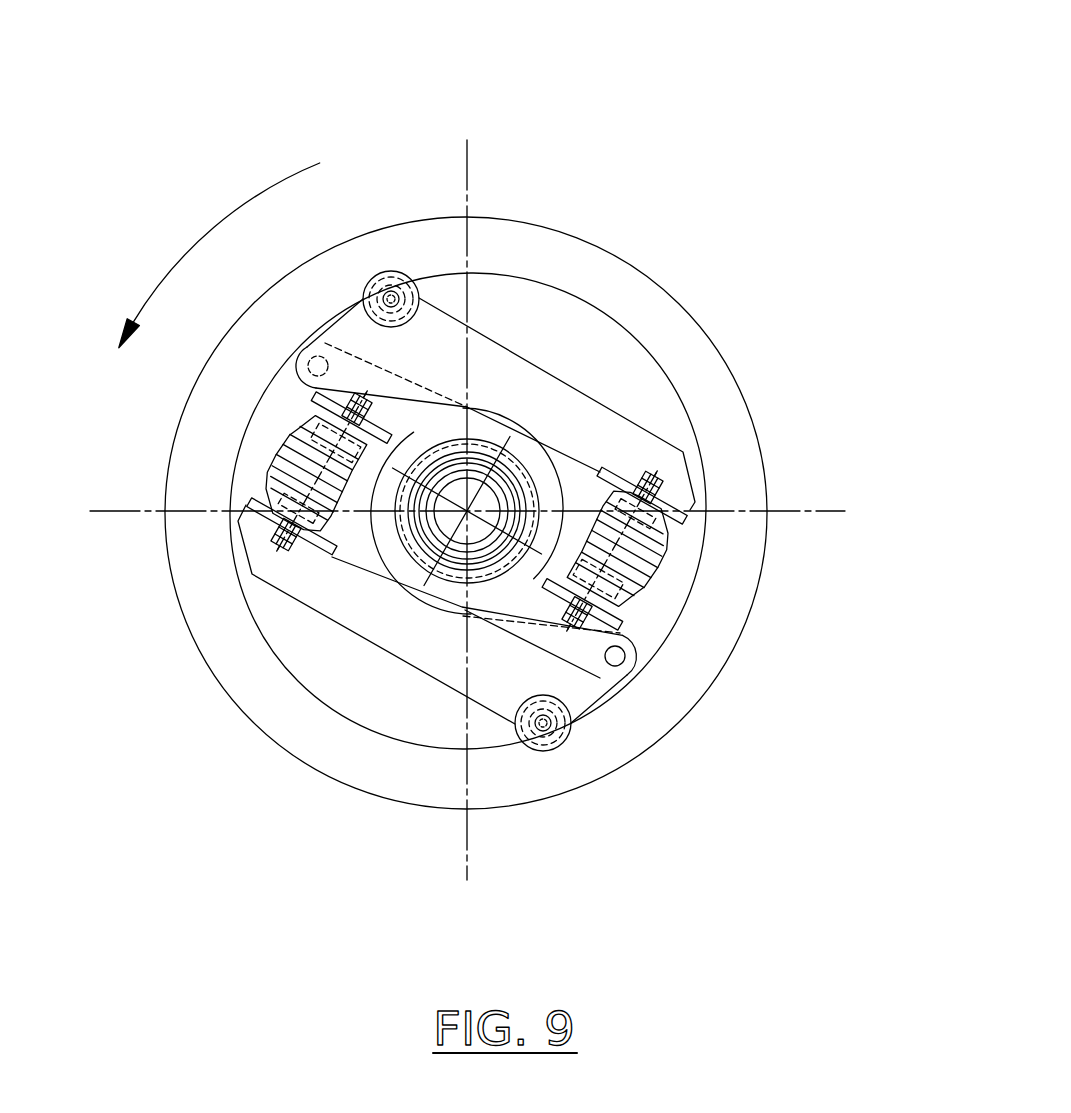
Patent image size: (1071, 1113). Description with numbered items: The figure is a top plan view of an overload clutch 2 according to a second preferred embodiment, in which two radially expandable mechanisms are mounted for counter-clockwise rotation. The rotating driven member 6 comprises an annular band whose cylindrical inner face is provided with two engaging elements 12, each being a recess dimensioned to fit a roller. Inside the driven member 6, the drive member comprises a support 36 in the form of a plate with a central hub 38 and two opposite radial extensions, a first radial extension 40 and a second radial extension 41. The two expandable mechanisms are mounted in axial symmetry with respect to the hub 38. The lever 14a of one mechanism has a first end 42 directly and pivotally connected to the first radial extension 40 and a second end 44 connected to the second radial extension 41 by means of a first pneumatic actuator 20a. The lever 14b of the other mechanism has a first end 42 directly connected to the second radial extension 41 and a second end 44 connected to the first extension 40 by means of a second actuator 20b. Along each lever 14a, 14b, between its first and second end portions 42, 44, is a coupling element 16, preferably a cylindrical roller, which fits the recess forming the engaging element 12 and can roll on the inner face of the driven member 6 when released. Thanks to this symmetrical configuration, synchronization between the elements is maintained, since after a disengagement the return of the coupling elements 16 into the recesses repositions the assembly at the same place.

The overload clutch 2 is at (685, 106).
The driven member 6 is at (574, 215).
The engaging element 12 is at (393, 282).
The coupling element 16 is at (410, 283).
The lever 14a is at (603, 410).
The lever 14b is at (403, 646).
The first pneumatic actuator 20a is at (659, 588).
The second actuator 20b is at (246, 484).
The support 36 is at (370, 577).
The hub 38 is at (537, 457).
The first radial extension 40 is at (305, 396).
The second radial extension 41 is at (640, 657).
The first end portion 42 is at (310, 347).
The second end portion 44 is at (680, 475).